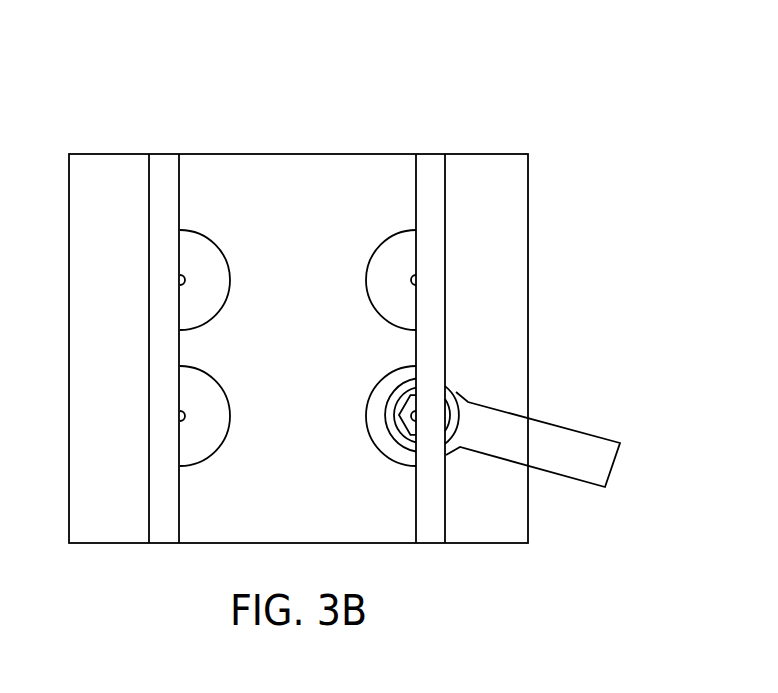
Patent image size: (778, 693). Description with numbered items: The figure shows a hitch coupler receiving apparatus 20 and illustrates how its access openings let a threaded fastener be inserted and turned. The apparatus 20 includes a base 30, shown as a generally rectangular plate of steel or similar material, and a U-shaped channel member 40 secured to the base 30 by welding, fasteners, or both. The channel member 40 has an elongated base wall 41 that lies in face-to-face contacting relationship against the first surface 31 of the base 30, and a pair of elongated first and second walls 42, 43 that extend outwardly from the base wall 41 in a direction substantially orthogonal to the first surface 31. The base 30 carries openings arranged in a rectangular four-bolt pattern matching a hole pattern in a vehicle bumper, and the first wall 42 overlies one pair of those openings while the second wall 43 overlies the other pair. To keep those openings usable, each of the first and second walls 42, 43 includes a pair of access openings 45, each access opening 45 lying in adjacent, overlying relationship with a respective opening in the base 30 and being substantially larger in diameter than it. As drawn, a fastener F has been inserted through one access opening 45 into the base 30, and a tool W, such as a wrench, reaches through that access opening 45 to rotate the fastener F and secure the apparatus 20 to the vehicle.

The hitch coupler receiving apparatus 20 is at (413, 115).
The base 30 is at (500, 153).
The first surface 31 is at (512, 199).
The channel member 40 is at (306, 153).
The base wall 41 is at (256, 175).
The first wall 42 is at (160, 343).
The second wall 43 is at (435, 343).
The access opening 45 is at (220, 251).
The fastener F is at (452, 412).
The tool W is at (578, 442).